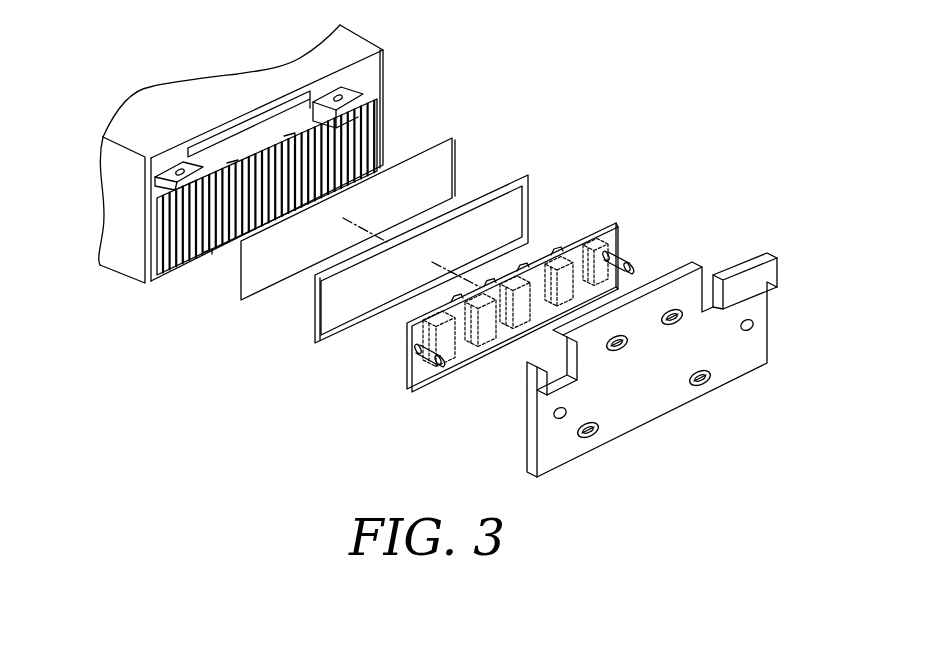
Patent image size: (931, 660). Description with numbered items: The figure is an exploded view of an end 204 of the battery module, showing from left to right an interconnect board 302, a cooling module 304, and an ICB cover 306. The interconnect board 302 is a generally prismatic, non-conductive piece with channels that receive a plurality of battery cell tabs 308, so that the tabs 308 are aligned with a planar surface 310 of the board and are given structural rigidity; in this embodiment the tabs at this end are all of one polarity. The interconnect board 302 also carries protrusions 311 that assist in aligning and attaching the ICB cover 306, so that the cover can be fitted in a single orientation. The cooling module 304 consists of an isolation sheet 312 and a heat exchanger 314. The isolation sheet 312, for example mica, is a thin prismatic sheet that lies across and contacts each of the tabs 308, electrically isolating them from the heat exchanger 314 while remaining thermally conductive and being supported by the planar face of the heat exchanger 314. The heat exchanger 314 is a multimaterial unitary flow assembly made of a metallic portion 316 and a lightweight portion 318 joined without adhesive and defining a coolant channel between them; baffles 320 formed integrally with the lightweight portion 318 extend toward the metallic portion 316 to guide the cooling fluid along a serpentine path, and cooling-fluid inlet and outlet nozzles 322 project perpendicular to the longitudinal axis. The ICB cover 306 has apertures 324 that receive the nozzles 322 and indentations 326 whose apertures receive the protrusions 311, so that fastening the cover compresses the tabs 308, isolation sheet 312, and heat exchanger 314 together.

The end of the battery module 204 is at (626, 88).
The interconnect board 302 is at (209, 140).
The cooling module 304 is at (246, 401).
The ICB cover 306 is at (757, 292).
The battery cell tabs 308 is at (352, 136).
The planar surface 310 is at (164, 277).
The protrusions 311 is at (292, 136).
The isolation sheet 312 is at (455, 140).
The heat exchanger 314 is at (348, 370).
The metallic portion 316 is at (531, 176).
The lightweight portion 318 is at (618, 228).
The baffles 320 is at (524, 263).
The cooling-fluid inlet and outlet nozzles 322 is at (634, 263).
The apertures 324 is at (754, 323).
The indentations 326 is at (707, 384).